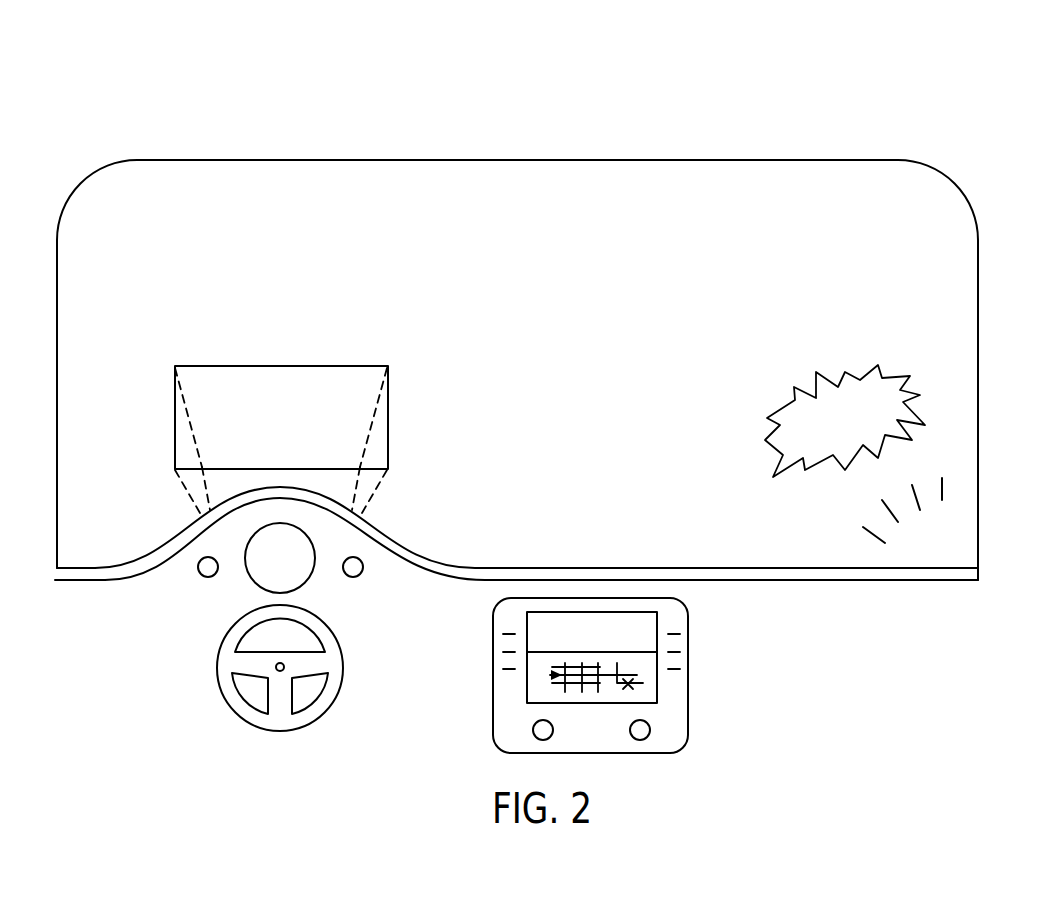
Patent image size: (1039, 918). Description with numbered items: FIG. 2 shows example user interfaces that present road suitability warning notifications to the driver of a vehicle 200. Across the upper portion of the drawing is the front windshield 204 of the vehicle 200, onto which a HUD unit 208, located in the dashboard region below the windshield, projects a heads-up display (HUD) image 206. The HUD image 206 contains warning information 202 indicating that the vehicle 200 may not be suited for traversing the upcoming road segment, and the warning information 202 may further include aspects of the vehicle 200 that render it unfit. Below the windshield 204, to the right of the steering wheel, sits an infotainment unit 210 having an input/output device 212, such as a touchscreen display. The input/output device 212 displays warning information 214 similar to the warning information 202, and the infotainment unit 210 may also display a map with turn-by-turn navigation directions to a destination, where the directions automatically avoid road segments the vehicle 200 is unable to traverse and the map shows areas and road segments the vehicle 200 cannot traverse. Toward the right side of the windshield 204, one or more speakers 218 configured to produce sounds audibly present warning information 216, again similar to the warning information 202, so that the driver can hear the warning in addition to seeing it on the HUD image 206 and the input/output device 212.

The vehicle 200 is at (120, 125).
The warning information 202 is at (362, 364).
The front windshield 204 is at (260, 178).
The heads-up display (HUD) image 206 is at (390, 420).
The HUD unit 208 is at (375, 506).
The infotainment unit 210 is at (540, 598).
The input/output device 212 is at (657, 687).
The warning information 214 is at (653, 608).
The warning information 216 is at (888, 388).
The speakers 218 is at (938, 548).